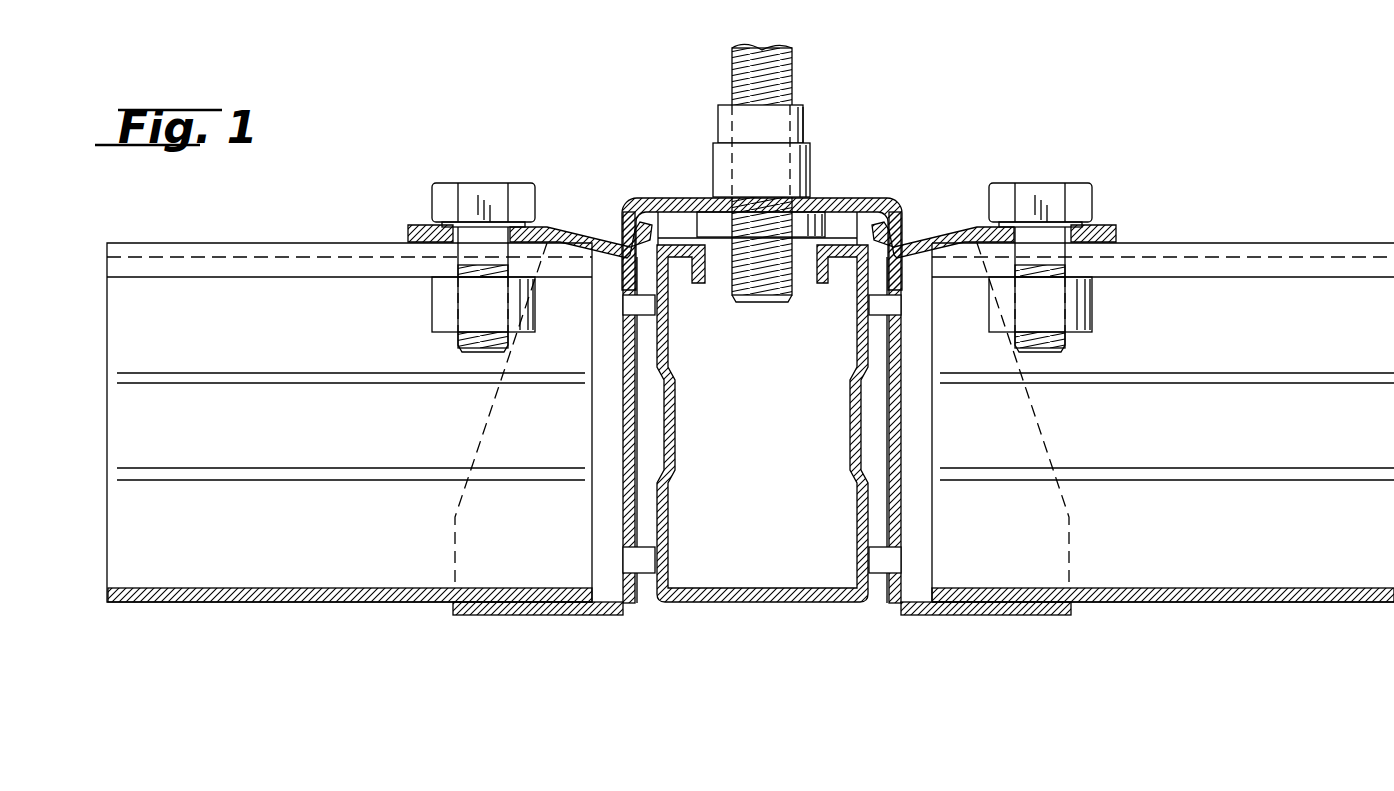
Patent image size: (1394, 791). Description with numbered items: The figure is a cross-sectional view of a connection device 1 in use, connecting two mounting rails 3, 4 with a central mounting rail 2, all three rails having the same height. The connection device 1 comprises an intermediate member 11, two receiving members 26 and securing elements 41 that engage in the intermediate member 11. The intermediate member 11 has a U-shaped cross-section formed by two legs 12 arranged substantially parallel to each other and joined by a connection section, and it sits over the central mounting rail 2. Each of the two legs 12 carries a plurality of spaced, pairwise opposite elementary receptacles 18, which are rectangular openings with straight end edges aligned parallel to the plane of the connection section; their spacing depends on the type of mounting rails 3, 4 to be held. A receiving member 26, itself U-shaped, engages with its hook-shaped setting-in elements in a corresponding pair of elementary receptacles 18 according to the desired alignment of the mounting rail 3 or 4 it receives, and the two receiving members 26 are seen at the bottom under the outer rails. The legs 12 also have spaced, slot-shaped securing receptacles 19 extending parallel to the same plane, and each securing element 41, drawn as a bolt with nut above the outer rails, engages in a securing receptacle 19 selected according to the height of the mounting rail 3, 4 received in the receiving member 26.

The connection device 1 is at (766, 345).
The mounting rail 2 is at (762, 602).
The mounting rail 3 is at (1262, 558).
The mounting rail 4 is at (265, 555).
The intermediate member 11 is at (647, 192).
The legs 12 is at (632, 425).
The elementary receptacles 18 is at (622, 533).
The securing receptacles 19 is at (889, 453).
The receiving member 26 is at (612, 575).
The securing element 41 is at (428, 188).